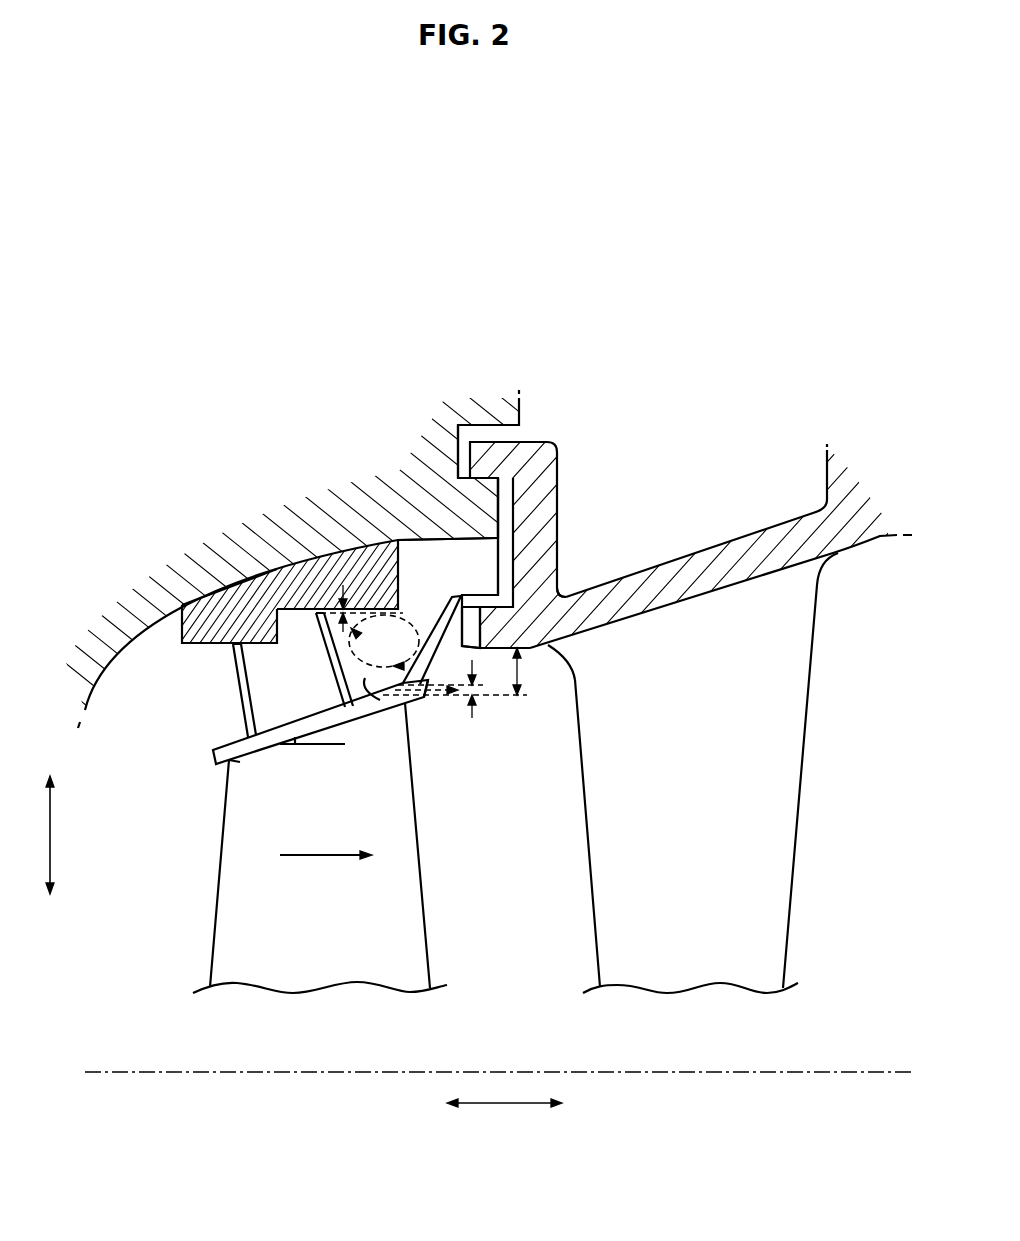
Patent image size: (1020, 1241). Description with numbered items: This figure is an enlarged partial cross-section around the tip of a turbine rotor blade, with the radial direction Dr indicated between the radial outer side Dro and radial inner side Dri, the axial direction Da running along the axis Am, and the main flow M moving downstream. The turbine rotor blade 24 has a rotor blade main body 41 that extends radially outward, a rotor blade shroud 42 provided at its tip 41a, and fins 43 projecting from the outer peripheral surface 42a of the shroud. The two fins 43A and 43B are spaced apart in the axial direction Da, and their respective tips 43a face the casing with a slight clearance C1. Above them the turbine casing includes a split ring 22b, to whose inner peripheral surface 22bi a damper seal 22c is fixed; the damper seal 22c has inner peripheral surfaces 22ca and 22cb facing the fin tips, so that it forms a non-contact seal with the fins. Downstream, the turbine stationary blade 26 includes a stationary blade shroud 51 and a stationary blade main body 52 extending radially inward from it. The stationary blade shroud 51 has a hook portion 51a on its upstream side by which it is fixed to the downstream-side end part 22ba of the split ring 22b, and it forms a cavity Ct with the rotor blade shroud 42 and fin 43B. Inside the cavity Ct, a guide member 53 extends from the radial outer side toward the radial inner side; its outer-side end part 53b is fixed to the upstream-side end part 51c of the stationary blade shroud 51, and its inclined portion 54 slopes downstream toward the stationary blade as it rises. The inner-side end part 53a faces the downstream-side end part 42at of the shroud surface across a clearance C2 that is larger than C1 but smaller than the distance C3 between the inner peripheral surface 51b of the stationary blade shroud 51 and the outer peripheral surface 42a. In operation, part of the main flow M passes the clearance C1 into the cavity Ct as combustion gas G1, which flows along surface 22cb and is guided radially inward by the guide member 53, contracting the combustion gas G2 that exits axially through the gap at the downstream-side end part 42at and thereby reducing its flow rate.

The split ring 22b is at (270, 570).
The downstream-side end part 22ba is at (487, 507).
The inner peripheral surface 22bi is at (395, 535).
The damper seal 22c is at (422, 530).
The inner peripheral surface 22ca is at (200, 592).
The inner peripheral surface 22cb is at (442, 530).
The turbine rotor blade 24 is at (198, 898).
The turbine stationary blade 26 is at (812, 818).
The rotor blade main body 41 is at (232, 930).
The tip 41a is at (248, 750).
The rotor blade shroud 42 is at (213, 757).
The outer peripheral surface 42a is at (240, 650).
The downstream-side end part 42at is at (372, 690).
The fin 43 is at (256, 525).
The fin 43A is at (150, 652).
The fin 43B is at (296, 592).
The tip 43a is at (318, 610).
The stationary blade shroud 51 is at (697, 565).
The hook portion 51a is at (535, 442).
The inner peripheral surface 51b is at (548, 652).
The upstream-side end part 51c is at (560, 765).
The stationary blade main body 52 is at (792, 684).
The guide member 53 is at (515, 556).
The inner-side end part 53a is at (458, 680).
The outer-side end part 53b is at (510, 568).
The inclined portion 54 is at (560, 605).
The combustion gas G1 is at (415, 628).
The combustion gas G2 is at (440, 707).
The clearance C1 is at (345, 545).
The clearance C2 is at (482, 655).
The distance C3 is at (535, 657).
The cavity Ct is at (425, 705).
The main flow M is at (330, 860).
The radial direction Dr is at (37, 835).
The radial outer side Dro is at (51, 762).
The radial inner side Dri is at (52, 905).
The axial direction Da is at (504, 1120).
The axis Am is at (866, 1070).